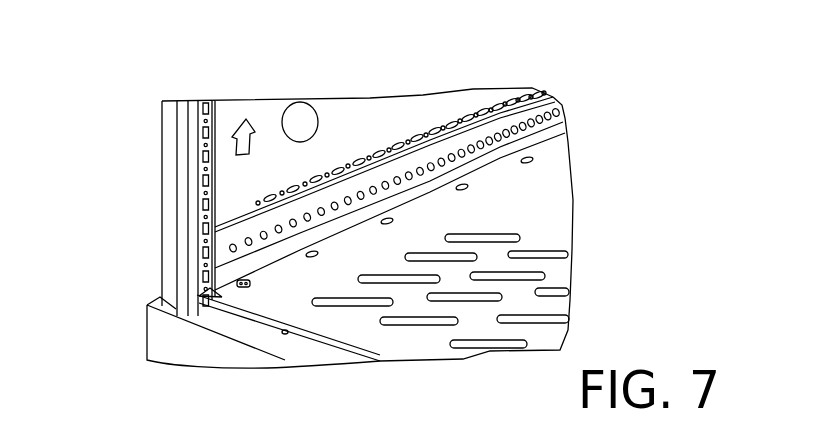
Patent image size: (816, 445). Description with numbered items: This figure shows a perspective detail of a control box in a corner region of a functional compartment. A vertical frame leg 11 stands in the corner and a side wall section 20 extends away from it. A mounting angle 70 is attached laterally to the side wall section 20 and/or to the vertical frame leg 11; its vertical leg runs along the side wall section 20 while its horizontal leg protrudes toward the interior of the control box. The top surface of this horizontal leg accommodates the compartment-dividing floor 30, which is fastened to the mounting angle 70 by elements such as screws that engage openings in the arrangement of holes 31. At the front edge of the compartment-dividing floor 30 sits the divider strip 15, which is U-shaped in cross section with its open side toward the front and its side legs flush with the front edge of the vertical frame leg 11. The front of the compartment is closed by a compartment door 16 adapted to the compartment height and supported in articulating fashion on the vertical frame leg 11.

The vertical frame leg 11 is at (190, 182).
The divider strip 15 is at (213, 288).
The compartment door 16 is at (172, 337).
The side wall section 20 is at (408, 118).
The compartment-dividing floor 30 is at (550, 212).
The arrangement of holes 31 is at (250, 283).
The mounting angle 70 is at (540, 113).